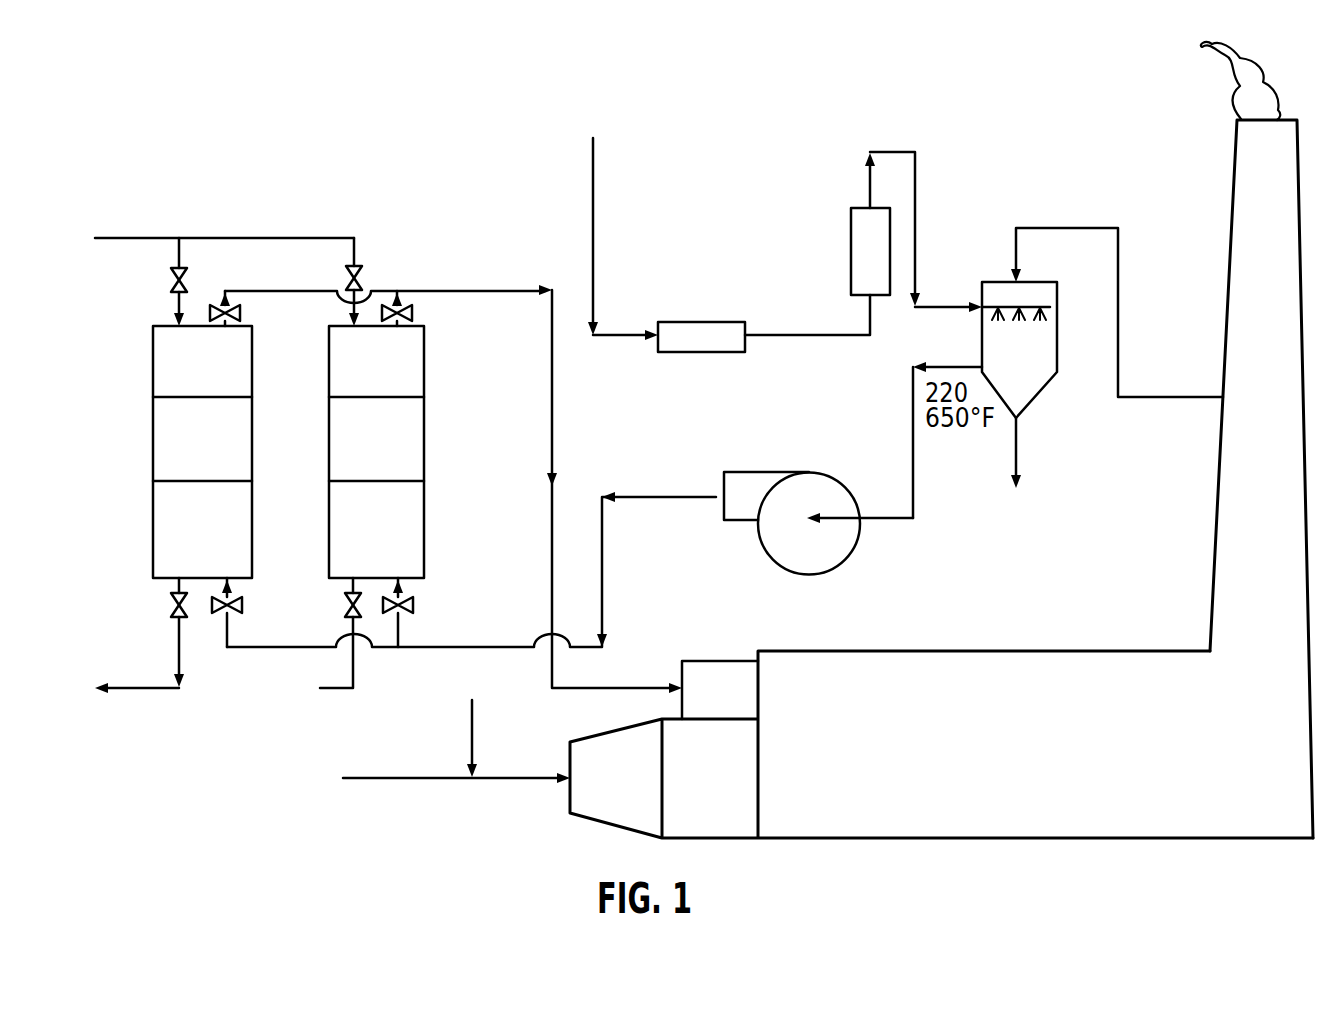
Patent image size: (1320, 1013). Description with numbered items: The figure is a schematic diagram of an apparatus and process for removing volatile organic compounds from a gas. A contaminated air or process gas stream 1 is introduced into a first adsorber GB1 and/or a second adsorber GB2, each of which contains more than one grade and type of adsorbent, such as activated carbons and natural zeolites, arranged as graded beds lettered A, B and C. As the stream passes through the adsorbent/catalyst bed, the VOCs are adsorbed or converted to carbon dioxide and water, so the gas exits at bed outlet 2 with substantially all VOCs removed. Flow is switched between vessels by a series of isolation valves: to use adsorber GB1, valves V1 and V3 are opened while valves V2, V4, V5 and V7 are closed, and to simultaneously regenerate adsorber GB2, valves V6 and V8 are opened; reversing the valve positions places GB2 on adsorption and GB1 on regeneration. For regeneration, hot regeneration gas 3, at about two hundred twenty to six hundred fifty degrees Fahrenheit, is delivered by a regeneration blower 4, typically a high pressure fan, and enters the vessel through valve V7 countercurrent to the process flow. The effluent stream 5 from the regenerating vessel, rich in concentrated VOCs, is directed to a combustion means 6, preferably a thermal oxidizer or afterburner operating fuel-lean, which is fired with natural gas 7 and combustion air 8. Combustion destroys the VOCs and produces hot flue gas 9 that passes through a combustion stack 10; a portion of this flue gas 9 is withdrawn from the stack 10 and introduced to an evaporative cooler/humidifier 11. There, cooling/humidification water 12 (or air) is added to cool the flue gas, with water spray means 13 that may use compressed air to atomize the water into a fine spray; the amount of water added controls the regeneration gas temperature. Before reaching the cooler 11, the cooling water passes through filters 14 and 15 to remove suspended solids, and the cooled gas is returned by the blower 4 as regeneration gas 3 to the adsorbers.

The contaminated process gas stream 1 is at (217, 238).
The bed outlet 2 is at (127, 688).
The regeneration gas 3 is at (471, 552).
The regeneration blower 4 is at (833, 535).
The effluent stream 5 is at (453, 475).
The combustion means 6 is at (708, 655).
The natural gas 7 is at (446, 778).
The combustion air 8 is at (472, 722).
The hot flue gas 9 is at (1268, 539).
The combustion stack 10 is at (1253, 242).
The evaporative cooler/humidifier 11 is at (1040, 402).
The cooling/humidification water 12 is at (769, 223).
The water spray means 13 is at (1015, 325).
The filter 14 is at (700, 353).
The filter 15 is at (863, 240).
The isolation valve V1 is at (162, 282).
The isolation valve V2 is at (373, 282).
The isolation valve V3 is at (161, 632).
The isolation valve V4 is at (334, 633).
The isolation valve V5 is at (243, 309).
The isolation valve V6 is at (417, 308).
The isolation valve V7 is at (243, 612).
The isolation valve V8 is at (417, 612).
The first adsorber GB1 is at (140, 490).
The second adsorber GB2 is at (440, 483).